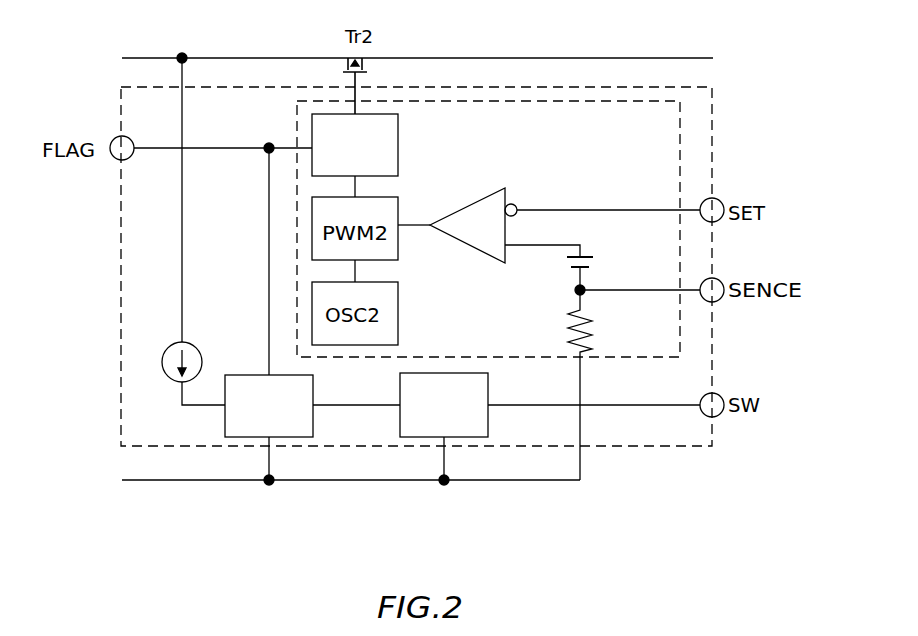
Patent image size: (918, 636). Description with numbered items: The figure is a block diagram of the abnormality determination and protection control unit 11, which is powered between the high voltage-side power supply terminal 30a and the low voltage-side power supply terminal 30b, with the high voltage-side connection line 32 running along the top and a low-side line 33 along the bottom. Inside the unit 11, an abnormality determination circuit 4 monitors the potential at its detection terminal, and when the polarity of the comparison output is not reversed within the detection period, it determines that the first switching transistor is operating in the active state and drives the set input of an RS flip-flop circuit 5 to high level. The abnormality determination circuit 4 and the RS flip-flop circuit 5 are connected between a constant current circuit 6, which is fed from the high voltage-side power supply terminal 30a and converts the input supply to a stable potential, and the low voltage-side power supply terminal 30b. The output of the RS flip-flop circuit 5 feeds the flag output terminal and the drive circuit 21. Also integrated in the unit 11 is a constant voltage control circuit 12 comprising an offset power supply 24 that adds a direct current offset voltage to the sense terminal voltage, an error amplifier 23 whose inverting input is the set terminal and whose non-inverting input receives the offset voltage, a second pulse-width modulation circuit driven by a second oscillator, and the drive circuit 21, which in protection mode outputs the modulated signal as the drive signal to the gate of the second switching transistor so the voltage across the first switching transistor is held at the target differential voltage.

The abnormality determination circuit 4 is at (488, 393).
The RS flip-flop circuit 5 is at (313, 392).
The constant current circuit 6 is at (198, 352).
The abnormality determination and protection control unit 11 is at (665, 448).
The constant voltage control circuit 12 is at (582, 105).
The drive circuit 21 is at (398, 150).
The error amplifier 23 is at (480, 254).
The offset power supply 24 is at (593, 258).
The high voltage-side power supply terminal 30a is at (132, 58).
The low voltage-side power supply terminal 30b is at (263, 483).
The high voltage-side connection line 32 is at (530, 58).
The lower wiring line 33 is at (363, 481).